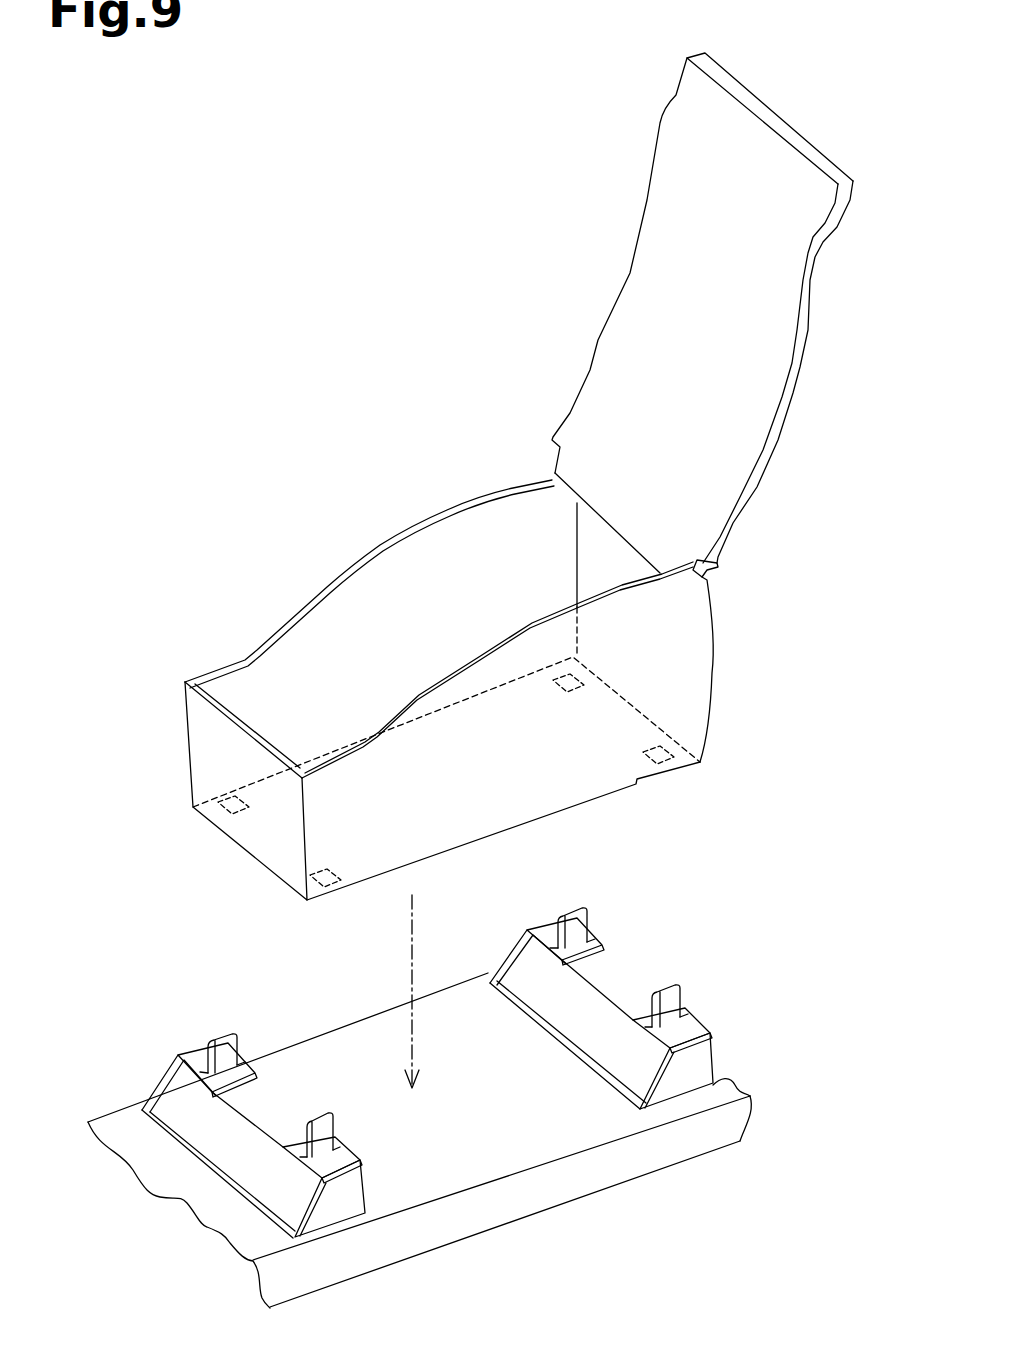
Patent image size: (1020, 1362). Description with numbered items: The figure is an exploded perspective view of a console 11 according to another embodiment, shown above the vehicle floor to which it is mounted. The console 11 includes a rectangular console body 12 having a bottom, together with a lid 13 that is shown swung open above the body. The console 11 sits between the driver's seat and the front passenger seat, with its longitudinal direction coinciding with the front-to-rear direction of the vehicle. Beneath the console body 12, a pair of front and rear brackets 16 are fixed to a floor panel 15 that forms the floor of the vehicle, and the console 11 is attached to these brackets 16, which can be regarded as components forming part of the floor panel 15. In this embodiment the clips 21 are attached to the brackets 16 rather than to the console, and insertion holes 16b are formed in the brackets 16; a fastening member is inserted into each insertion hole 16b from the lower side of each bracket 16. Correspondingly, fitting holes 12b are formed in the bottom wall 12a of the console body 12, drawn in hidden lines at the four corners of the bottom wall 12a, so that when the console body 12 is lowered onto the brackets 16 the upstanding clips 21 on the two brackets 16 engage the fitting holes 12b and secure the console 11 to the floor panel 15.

The console 11 is at (166, 543).
The console body 12 is at (713, 660).
The bottom wall 12a is at (592, 770).
The fitting holes 12b is at (230, 793).
The lid 13 is at (793, 395).
The floor panel 15 is at (553, 1188).
The brackets 16 is at (160, 1080).
The insertion holes 16b is at (207, 1067).
The clips 21 is at (228, 1043).